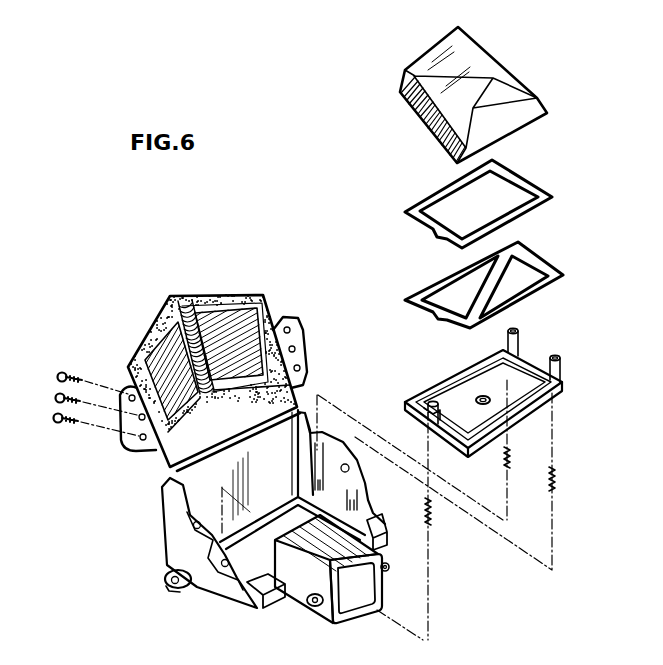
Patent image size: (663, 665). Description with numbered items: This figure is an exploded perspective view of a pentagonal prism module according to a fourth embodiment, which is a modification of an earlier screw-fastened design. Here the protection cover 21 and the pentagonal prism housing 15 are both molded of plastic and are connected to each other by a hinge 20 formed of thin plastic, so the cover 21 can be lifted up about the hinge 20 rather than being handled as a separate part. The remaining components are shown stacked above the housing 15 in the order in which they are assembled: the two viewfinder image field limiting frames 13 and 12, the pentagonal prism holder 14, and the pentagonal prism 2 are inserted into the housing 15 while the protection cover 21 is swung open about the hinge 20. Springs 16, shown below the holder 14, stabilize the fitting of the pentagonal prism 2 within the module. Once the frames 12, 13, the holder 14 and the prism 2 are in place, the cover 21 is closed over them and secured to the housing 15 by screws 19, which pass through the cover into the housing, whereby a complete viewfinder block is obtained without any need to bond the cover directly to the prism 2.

The pentagonal prism 2 is at (528, 72).
The viewfinder image field limiting frame 12 is at (527, 182).
The viewfinder image field limiting frame 13 is at (538, 253).
The pentagonal prism holder 14 is at (560, 382).
The pentagonal prism housing 15 is at (237, 589).
The springs 16 is at (556, 481).
The screws 19 is at (73, 360).
The hinge 20 is at (165, 473).
The protection cover 21 is at (283, 276).